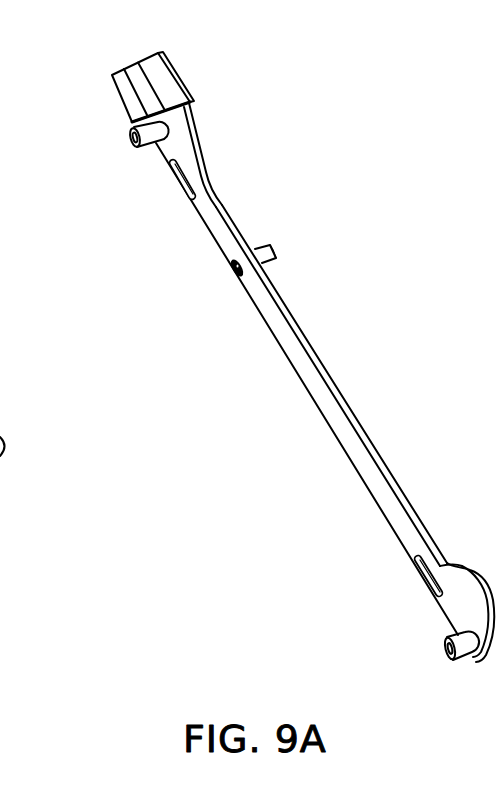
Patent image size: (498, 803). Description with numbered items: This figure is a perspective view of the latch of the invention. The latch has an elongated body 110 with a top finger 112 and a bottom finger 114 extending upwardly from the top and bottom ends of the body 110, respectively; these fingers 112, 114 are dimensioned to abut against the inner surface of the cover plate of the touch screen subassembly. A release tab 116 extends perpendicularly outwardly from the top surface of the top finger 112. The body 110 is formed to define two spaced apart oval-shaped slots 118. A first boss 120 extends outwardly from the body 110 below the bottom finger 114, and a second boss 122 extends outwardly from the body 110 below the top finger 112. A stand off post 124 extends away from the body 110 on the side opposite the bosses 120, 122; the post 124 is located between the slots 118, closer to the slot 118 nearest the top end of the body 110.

The elongated body 110 is at (326, 408).
The top finger 112 is at (187, 130).
The bottom finger 114 is at (468, 611).
The release tab 116 is at (111, 82).
The oval-shaped slots 118 is at (183, 182).
The first boss 120 is at (470, 658).
The second boss 122 is at (85, 165).
The stand off post 124 is at (275, 252).